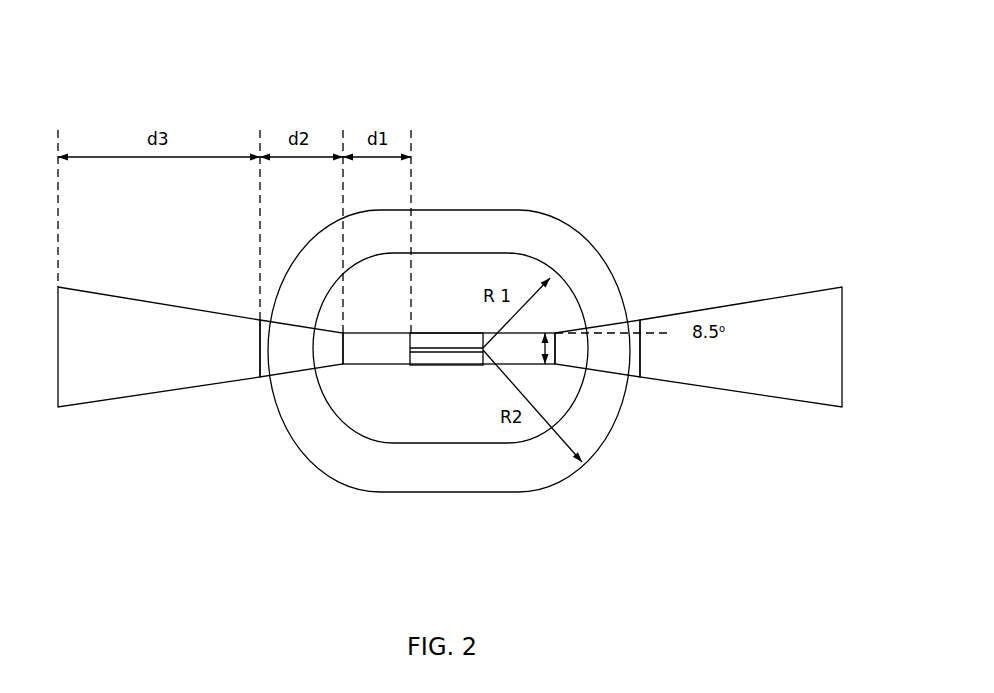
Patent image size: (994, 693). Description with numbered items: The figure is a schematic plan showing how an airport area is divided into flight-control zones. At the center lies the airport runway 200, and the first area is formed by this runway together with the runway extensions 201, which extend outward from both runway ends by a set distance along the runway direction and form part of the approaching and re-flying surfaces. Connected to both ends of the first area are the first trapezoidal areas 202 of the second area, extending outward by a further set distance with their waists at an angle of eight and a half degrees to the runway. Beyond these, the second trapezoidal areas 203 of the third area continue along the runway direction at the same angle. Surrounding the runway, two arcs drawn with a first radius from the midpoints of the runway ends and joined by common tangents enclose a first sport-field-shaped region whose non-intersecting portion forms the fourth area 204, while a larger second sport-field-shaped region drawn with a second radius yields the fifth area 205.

The airport runway 200 is at (450, 338).
The runway extensions 201 is at (392, 352).
The first trapezoidal areas 202 is at (298, 338).
The second trapezoidal areas 203 is at (203, 343).
The fourth area 204 is at (452, 398).
The fifth area 205 is at (358, 447).